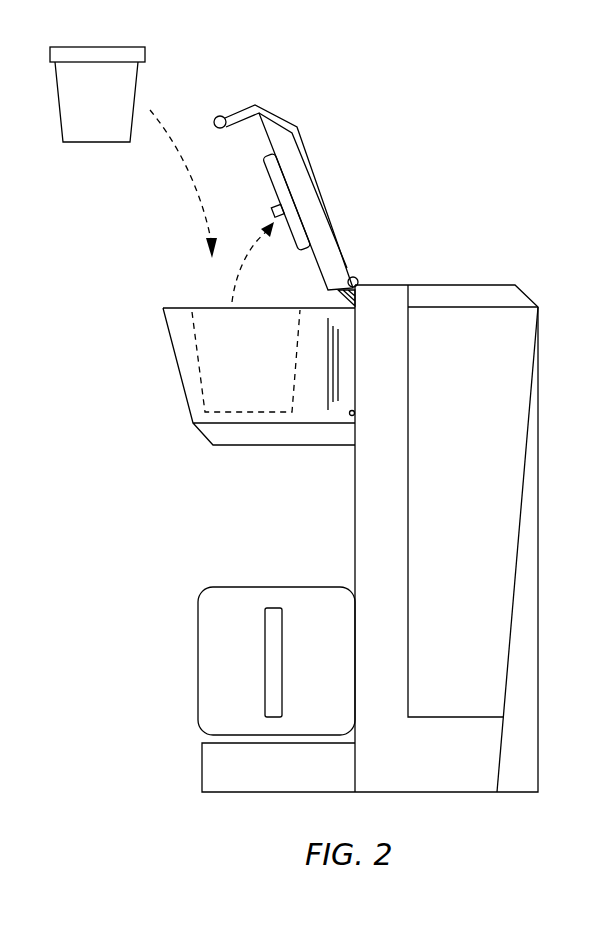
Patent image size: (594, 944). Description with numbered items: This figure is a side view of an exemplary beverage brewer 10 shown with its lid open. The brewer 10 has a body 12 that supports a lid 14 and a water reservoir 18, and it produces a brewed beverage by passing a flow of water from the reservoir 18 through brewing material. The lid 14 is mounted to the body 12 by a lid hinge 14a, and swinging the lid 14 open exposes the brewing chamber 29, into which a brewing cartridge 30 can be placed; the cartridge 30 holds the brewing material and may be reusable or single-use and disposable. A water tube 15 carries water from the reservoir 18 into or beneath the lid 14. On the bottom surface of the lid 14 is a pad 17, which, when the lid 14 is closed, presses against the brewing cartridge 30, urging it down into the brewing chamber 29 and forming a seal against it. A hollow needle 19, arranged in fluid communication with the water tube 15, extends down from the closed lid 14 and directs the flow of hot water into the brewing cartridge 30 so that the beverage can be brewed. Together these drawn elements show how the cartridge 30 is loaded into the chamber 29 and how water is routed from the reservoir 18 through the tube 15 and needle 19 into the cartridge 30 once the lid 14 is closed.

The beverage brewer 10 is at (472, 222).
The body 12 is at (399, 395).
The lid 14 is at (325, 238).
The lid hinge 14a is at (358, 277).
The water tube 15 is at (363, 295).
The pad 17 is at (252, 211).
The water reservoir 18 is at (472, 455).
The hollow needle 19 is at (262, 208).
The brewing chamber 29 is at (252, 356).
The brewing cartridge 30 is at (114, 108).